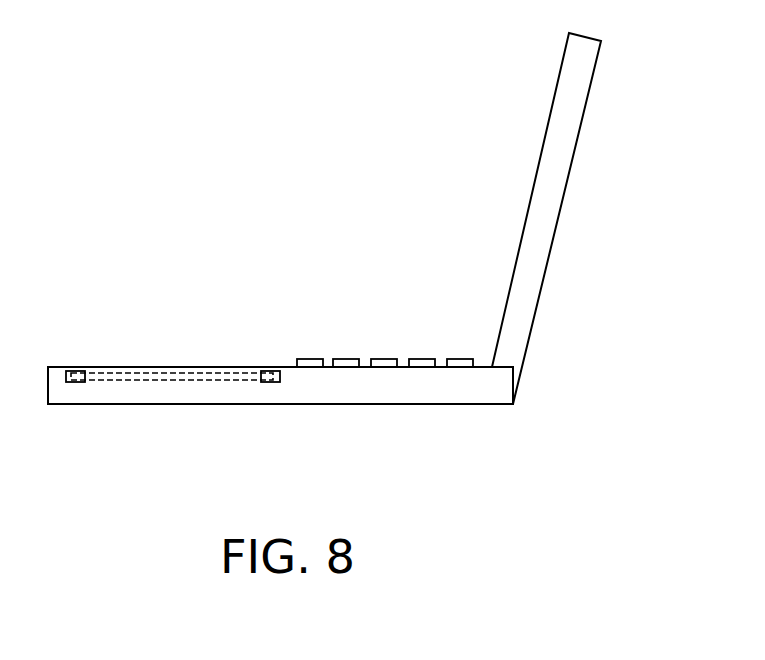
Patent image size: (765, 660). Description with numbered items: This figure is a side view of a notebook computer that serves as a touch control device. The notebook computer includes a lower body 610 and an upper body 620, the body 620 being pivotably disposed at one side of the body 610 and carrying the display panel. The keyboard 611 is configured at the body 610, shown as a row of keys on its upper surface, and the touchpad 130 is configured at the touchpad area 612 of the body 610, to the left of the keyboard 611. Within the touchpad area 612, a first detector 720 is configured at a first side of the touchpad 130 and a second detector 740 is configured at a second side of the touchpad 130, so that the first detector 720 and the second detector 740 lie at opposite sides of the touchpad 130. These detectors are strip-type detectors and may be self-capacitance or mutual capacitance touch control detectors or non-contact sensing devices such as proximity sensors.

The body 610 is at (415, 388).
The body 620 is at (533, 285).
The keyboard 611 is at (475, 330).
The touchpad area 612 is at (280, 330).
The touchpad 130 is at (172, 381).
The first detector 720 is at (268, 383).
The second detector 740 is at (76, 383).